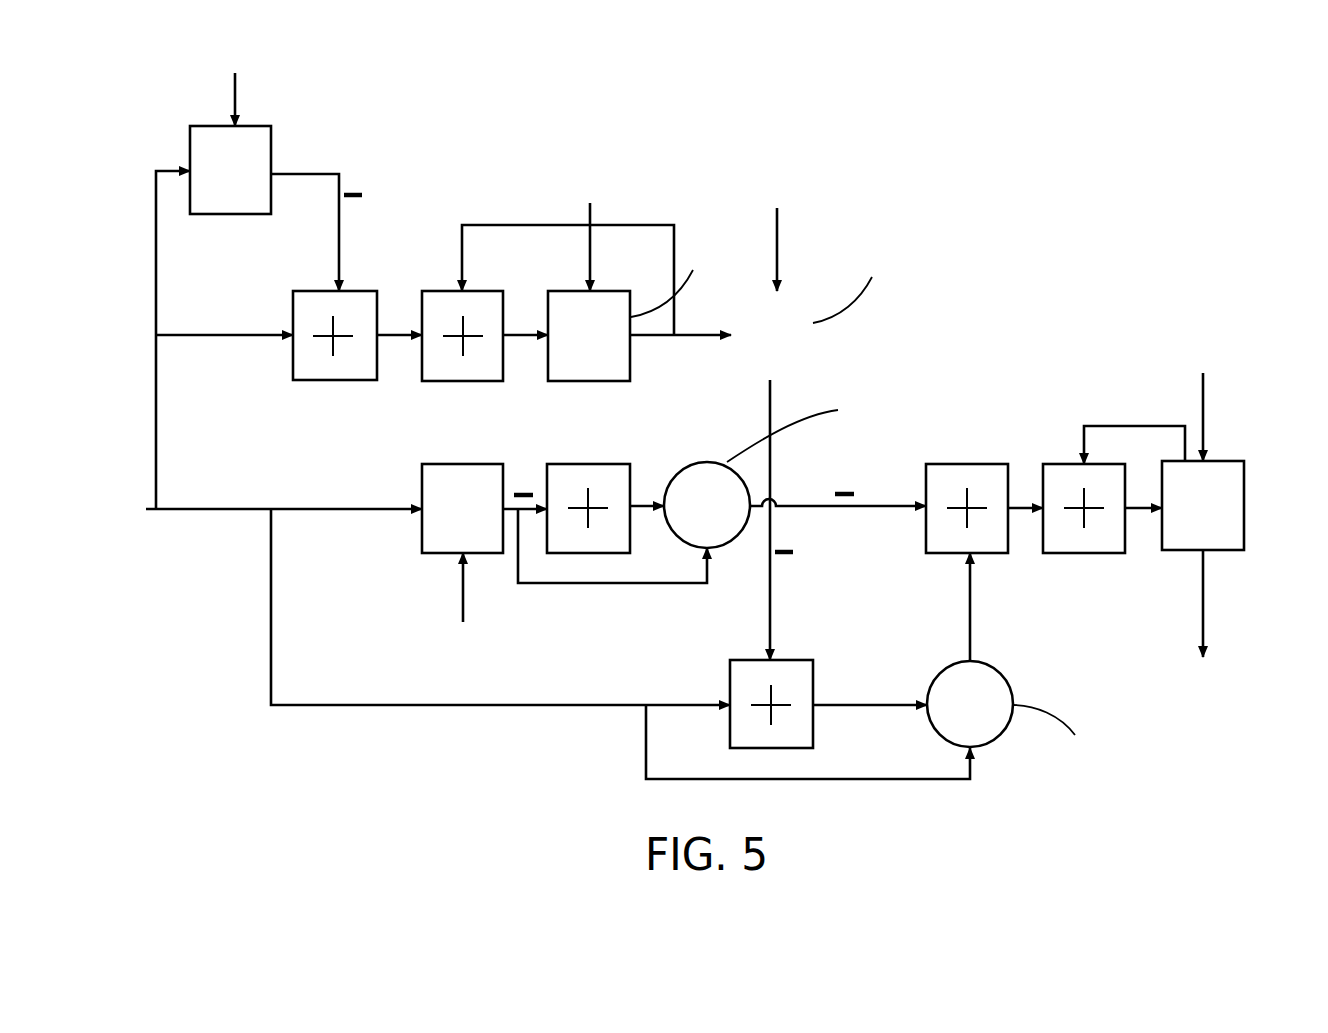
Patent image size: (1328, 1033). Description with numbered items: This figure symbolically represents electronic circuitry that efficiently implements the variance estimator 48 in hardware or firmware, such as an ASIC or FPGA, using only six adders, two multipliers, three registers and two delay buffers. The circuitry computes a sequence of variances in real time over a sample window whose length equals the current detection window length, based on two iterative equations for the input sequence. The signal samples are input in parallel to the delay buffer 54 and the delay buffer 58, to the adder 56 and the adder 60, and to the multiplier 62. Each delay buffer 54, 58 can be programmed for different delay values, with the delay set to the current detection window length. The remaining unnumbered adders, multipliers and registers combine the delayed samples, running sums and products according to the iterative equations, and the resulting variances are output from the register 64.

The variance estimator 48 is at (1032, 232).
The delay buffer 54 is at (258, 125).
The adder 56 is at (358, 290).
The delay buffer 58 is at (473, 463).
The adder 60 is at (796, 659).
The multiplier 62 is at (993, 662).
The register 64 is at (1227, 458).